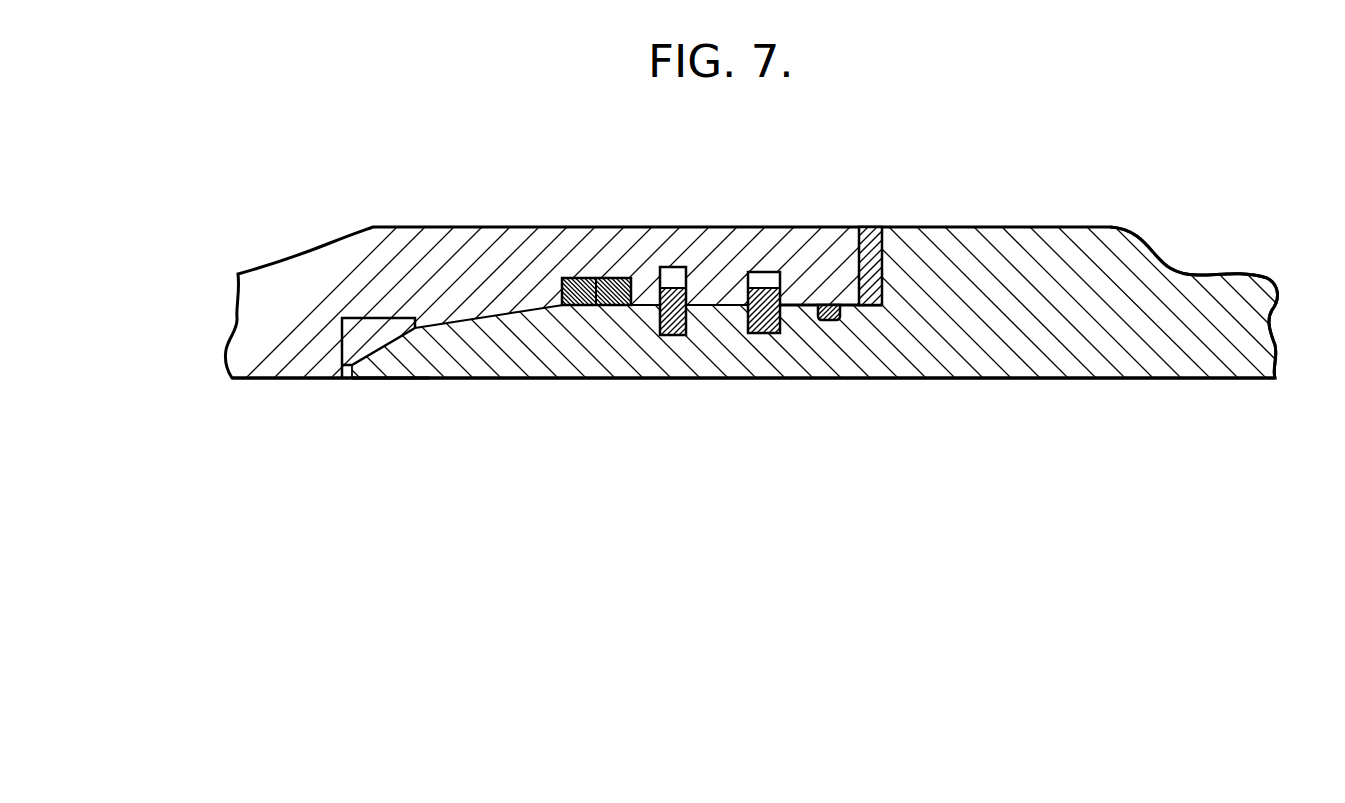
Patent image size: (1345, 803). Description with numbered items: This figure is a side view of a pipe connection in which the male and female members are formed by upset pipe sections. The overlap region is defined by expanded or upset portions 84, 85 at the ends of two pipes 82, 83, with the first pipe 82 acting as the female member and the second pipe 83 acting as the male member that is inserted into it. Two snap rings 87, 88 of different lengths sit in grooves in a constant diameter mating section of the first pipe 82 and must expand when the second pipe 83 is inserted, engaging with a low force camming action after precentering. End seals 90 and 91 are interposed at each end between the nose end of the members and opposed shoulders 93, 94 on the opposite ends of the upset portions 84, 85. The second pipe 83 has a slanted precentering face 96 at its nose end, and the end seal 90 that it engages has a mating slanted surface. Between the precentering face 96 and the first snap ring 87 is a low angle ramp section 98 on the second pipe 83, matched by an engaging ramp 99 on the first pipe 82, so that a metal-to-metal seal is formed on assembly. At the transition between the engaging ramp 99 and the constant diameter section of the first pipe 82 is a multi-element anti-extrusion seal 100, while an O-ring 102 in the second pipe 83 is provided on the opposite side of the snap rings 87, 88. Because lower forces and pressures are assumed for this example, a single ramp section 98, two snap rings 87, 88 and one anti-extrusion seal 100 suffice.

The first pipe 82 is at (228, 362).
The second pipe 83 is at (1275, 337).
The upset portion 84 is at (316, 249).
The upset portion 85 is at (1163, 249).
The first snap ring 87 is at (673, 278).
The second snap ring 88 is at (762, 282).
The end seal 90 is at (343, 373).
The end seal 91 is at (870, 232).
The shoulder 93 is at (335, 358).
The shoulder 94 is at (883, 253).
The precentering face 96 is at (390, 380).
The ramp section 98 is at (494, 340).
The engaging ramp 99 is at (513, 317).
The anti-extrusion seal 100 is at (603, 268).
The O-ring 102 is at (835, 318).